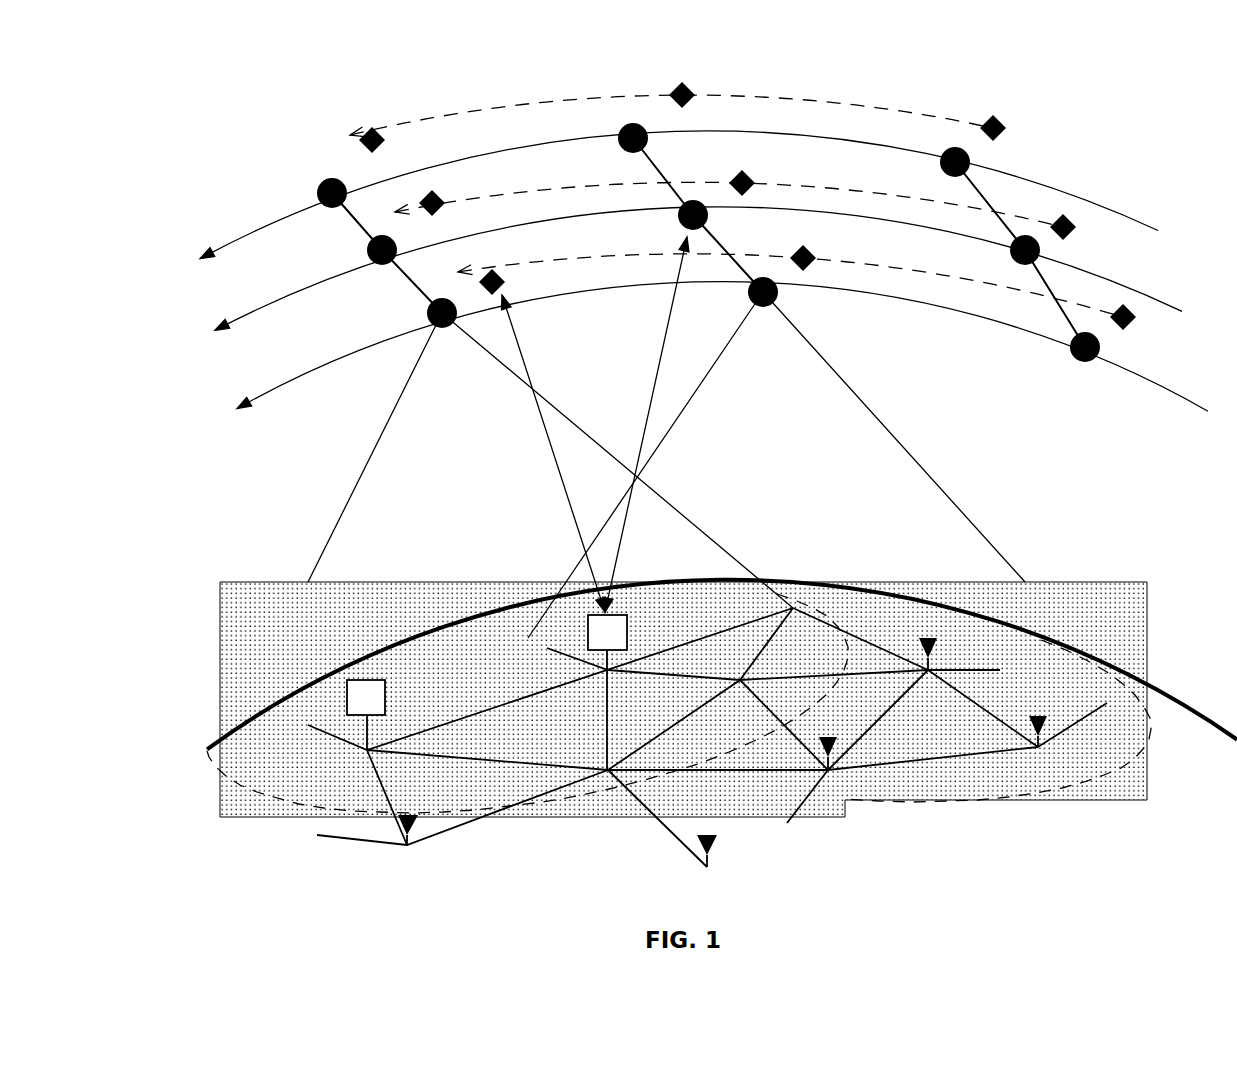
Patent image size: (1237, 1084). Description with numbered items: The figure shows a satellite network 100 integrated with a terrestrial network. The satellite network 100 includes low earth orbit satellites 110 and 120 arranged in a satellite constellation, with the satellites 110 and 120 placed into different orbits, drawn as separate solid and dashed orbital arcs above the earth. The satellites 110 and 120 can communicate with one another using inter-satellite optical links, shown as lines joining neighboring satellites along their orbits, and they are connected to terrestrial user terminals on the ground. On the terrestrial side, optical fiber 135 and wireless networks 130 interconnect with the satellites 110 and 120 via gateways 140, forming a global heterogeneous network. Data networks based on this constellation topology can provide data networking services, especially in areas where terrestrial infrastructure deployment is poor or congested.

The satellite network 100 is at (205, 87).
The low earth orbit satellites 110 is at (318, 188).
The low earth orbit satellites 120 is at (380, 131).
The wireless networks 130 is at (940, 642).
The optical fiber 135 is at (318, 735).
The gateways 140 is at (387, 697).